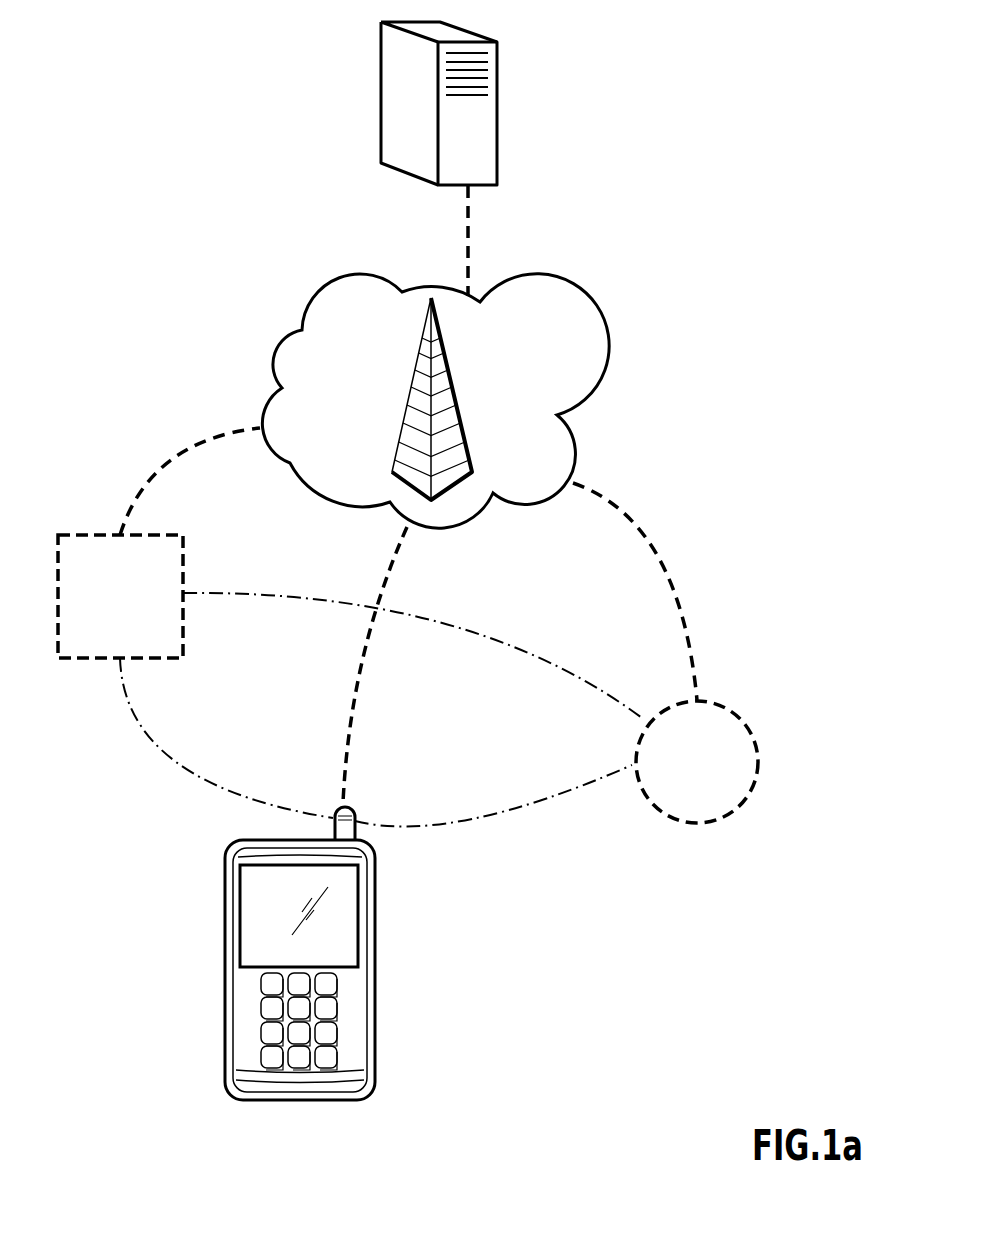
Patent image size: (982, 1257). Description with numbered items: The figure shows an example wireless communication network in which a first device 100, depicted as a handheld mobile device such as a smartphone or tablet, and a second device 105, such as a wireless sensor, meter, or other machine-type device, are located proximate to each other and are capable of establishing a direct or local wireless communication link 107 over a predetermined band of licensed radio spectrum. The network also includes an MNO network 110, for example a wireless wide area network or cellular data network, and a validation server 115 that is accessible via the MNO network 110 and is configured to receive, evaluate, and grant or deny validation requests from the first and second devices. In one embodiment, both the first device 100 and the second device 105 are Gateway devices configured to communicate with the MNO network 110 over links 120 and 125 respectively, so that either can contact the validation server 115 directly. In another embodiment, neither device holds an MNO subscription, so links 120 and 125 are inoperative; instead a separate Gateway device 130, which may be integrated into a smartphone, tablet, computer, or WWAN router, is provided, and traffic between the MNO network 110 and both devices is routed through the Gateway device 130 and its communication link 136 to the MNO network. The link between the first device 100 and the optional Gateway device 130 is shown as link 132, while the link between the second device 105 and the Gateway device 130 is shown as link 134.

The first device 100 is at (226, 1023).
The second device 105 is at (723, 773).
The direct or local wireless communication link 107 is at (493, 801).
The MNO network 110 is at (550, 356).
The validation server 115 is at (497, 87).
The link 120 is at (371, 665).
The link 125 is at (635, 591).
The Gateway device 130 is at (146, 608).
The link 132 is at (226, 738).
The link 134 is at (412, 655).
The communication link 136 is at (190, 481).